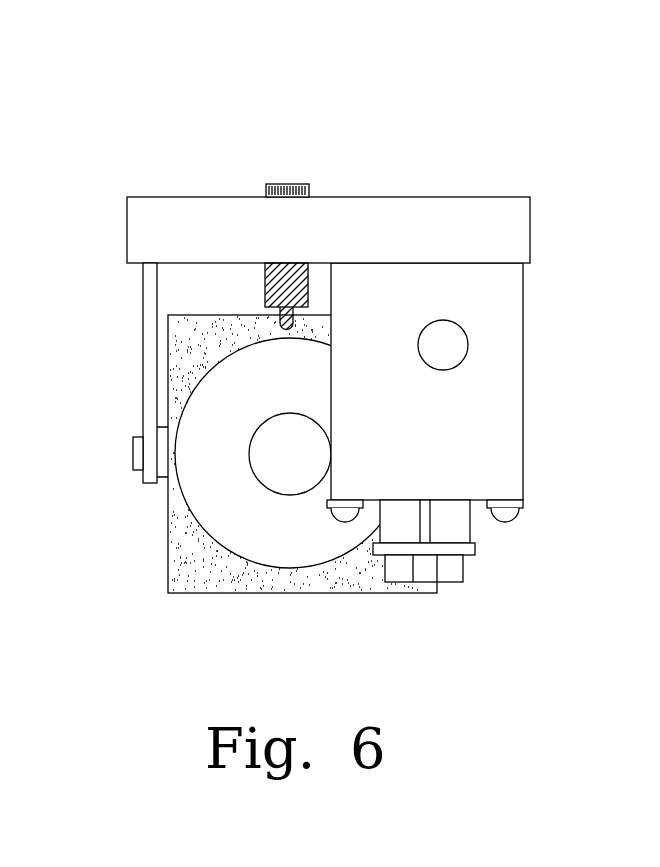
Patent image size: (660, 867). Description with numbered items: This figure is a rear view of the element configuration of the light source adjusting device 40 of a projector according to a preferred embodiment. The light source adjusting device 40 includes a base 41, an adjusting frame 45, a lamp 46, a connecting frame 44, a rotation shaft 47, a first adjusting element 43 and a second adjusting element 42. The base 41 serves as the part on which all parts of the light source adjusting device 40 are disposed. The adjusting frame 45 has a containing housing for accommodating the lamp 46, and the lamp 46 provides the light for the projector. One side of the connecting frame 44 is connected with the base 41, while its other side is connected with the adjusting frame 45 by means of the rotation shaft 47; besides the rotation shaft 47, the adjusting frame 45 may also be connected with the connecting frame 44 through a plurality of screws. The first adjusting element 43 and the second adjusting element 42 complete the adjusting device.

The light source adjusting device 40 is at (508, 137).
The base 41 is at (495, 242).
The second adjusting element 42 is at (275, 277).
The first adjusting element 43 is at (290, 195).
The connecting frame 44 is at (152, 347).
The adjusting frame 45 is at (358, 573).
The lamp 46 is at (212, 503).
The rotation shaft 47 is at (134, 453).